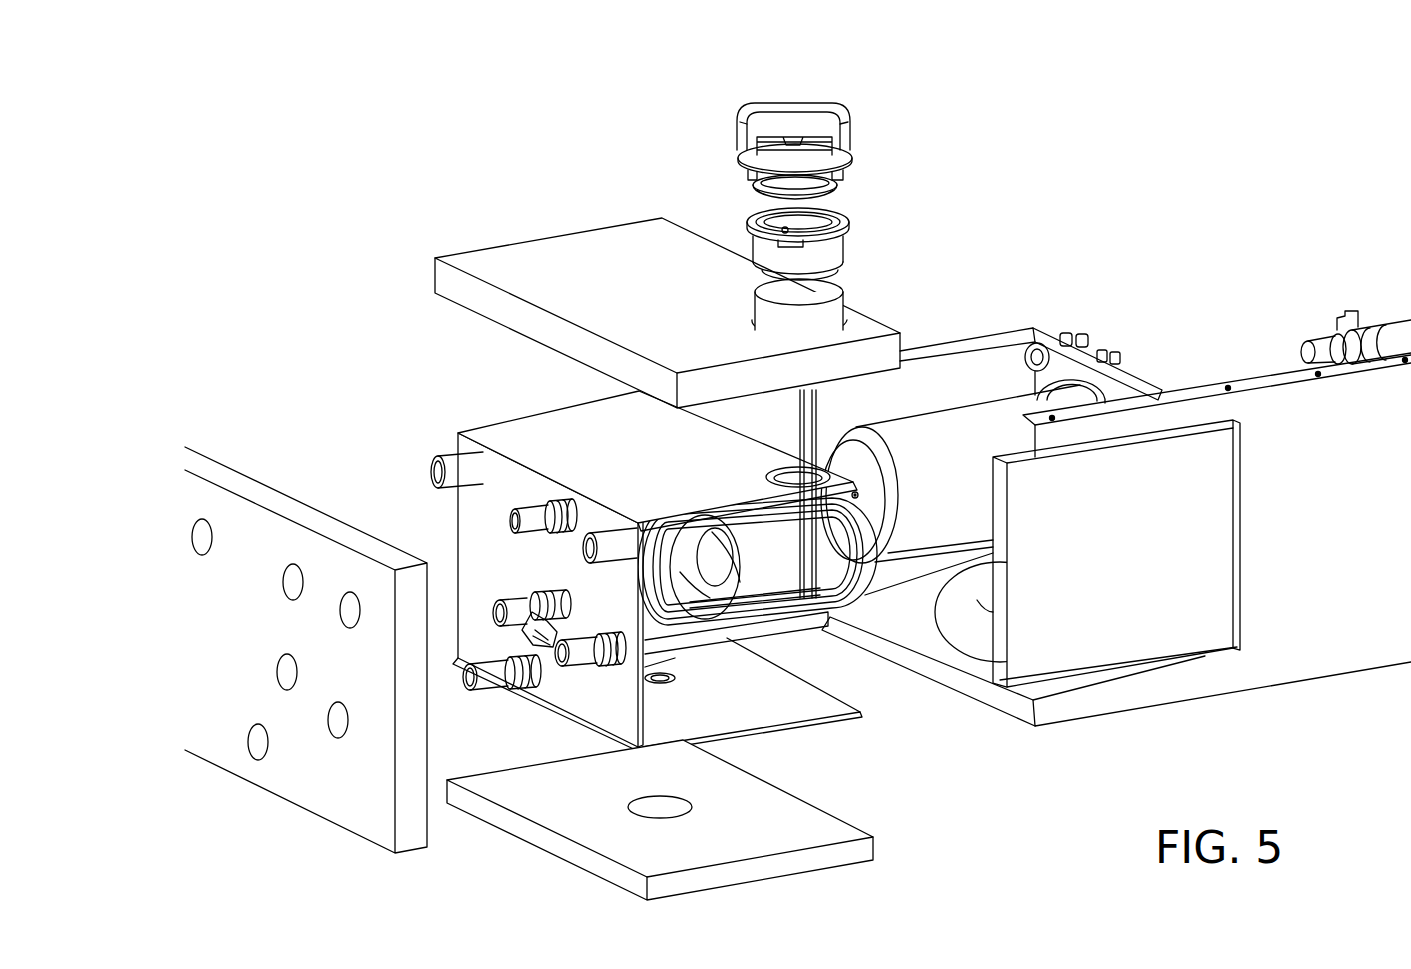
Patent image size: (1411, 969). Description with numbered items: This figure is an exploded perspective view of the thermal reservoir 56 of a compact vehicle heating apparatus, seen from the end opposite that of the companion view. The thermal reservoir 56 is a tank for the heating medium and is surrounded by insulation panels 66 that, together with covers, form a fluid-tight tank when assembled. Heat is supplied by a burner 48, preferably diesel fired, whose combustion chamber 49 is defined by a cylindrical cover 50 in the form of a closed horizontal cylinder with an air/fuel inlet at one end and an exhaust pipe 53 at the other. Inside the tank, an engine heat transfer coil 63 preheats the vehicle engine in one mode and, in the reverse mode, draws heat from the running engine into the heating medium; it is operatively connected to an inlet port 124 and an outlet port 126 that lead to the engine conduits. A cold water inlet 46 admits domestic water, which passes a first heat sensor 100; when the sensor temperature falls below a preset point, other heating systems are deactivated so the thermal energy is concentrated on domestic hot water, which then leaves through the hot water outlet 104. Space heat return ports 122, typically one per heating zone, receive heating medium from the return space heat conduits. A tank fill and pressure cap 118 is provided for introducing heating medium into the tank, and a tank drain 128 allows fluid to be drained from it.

The thermal reservoir 56 is at (416, 229).
The insulation panels 66 is at (531, 278).
The tank fill and pressure cap 118 is at (738, 172).
The space heat return ports 122 is at (460, 462).
The outlet port 126 is at (530, 515).
The cold water inlet 46 is at (505, 600).
The first heat sensor 100 is at (537, 610).
The hot water outlet 104 is at (503, 680).
The inlet port 124 is at (578, 663).
The tank drain 128 is at (680, 680).
The engine heat transfer coil 63 is at (807, 618).
The combustion chamber 49 is at (962, 432).
The cylindrical cover 50 is at (928, 520).
The burner 48 is at (1383, 328).
The exhaust pipe 53 is at (967, 633).